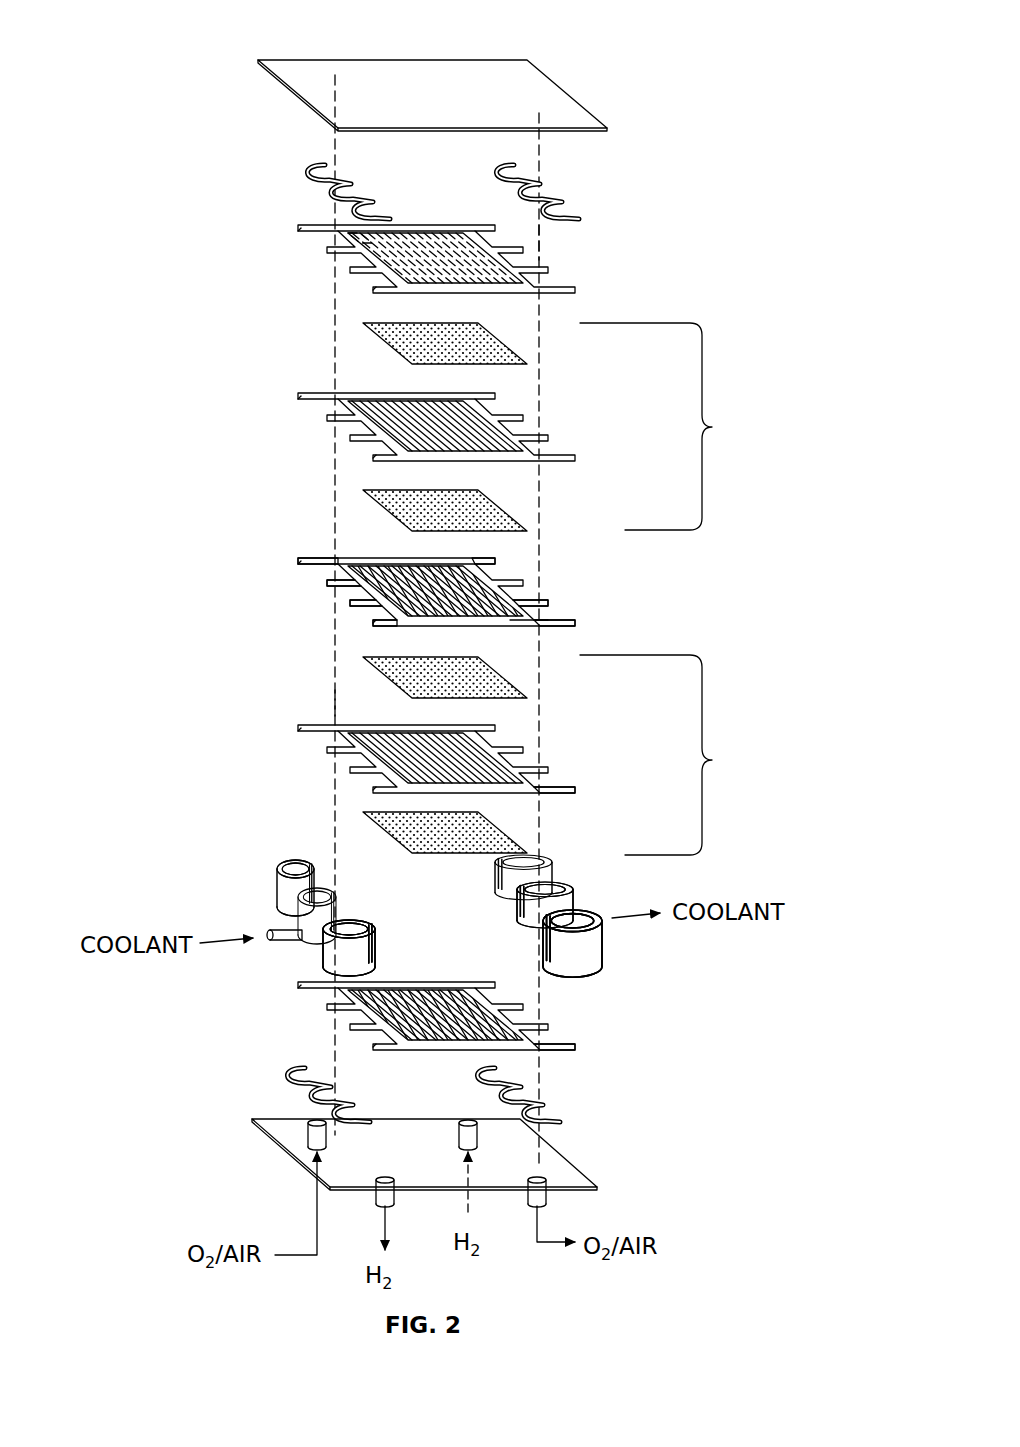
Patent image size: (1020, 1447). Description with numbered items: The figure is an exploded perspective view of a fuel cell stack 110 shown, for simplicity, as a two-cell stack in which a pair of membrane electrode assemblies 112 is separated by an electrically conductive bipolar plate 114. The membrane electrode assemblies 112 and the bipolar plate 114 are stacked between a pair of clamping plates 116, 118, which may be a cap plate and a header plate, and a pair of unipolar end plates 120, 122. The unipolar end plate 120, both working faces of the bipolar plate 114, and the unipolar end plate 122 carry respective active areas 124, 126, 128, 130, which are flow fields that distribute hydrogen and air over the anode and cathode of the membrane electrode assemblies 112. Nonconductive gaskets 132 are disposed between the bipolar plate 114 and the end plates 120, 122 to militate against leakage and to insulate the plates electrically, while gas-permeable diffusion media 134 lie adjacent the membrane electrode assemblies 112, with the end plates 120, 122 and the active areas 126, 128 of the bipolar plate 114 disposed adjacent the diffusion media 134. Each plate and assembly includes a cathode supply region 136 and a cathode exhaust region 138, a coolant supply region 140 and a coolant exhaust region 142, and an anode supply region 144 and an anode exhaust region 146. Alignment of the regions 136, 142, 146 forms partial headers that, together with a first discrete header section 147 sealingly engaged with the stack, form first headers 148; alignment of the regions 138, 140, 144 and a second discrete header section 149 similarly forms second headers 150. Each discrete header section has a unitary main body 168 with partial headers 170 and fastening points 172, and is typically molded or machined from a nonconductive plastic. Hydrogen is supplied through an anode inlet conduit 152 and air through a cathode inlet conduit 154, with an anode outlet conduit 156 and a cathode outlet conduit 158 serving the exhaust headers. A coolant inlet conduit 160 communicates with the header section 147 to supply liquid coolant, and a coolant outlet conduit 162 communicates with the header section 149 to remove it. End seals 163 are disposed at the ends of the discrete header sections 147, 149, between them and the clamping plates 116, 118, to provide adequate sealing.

The fuel cell stack 110 is at (572, 48).
The membrane electrode assemblies 112 is at (670, 589).
The bipolar plate 114 is at (548, 620).
The clamping plate 116 is at (258, 62).
The clamping plate 118 is at (293, 1168).
The unipolar end plate 120 is at (314, 220).
The unipolar end plate 122 is at (540, 778).
The active area 124 is at (400, 280).
The active area 126 is at (492, 578).
The active area 128 is at (360, 603).
The active area 130 is at (526, 1005).
The nonconductive gaskets 132 is at (520, 440).
The gas-permeable diffusion media 134 is at (380, 333).
The cathode supply region 136 is at (322, 562).
The cathode exhaust region 138 is at (572, 622).
The coolant supply region 140 is at (548, 598).
The coolant exhaust region 142 is at (340, 584).
The anode supply region 144 is at (500, 562).
The anode exhaust region 146 is at (372, 622).
The first discrete header section 147 is at (280, 864).
The first headers 148 is at (335, 700).
The second discrete header section 149 is at (548, 858).
The second headers 150 is at (540, 238).
The anode inlet conduit 152 is at (478, 1133).
The cathode inlet conduit 154 is at (308, 1135).
The anode outlet conduit 156 is at (380, 1205).
The cathode outlet conduit 158 is at (548, 1203).
The coolant inlet conduit 160 is at (282, 930).
The coolant outlet conduit 162 is at (600, 910).
The end seals 163 is at (322, 162).
The unitary main body 168 is at (347, 963).
The partial header 170 is at (306, 862).
The fastening point 172 is at (362, 928).